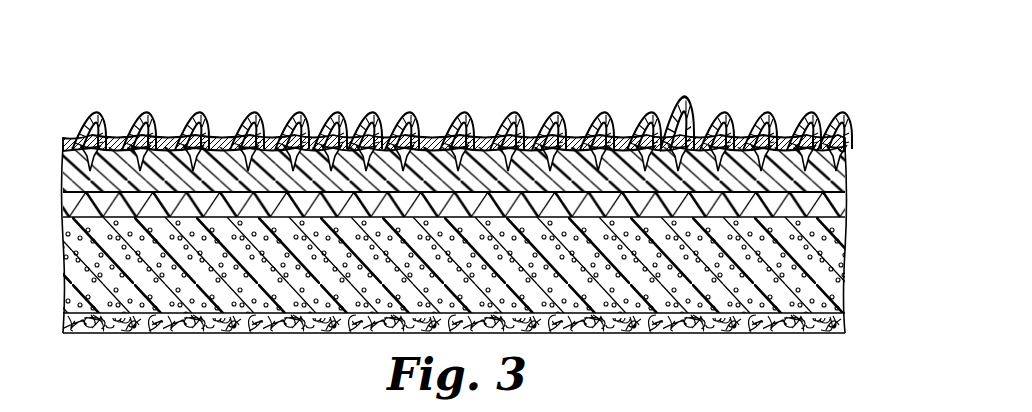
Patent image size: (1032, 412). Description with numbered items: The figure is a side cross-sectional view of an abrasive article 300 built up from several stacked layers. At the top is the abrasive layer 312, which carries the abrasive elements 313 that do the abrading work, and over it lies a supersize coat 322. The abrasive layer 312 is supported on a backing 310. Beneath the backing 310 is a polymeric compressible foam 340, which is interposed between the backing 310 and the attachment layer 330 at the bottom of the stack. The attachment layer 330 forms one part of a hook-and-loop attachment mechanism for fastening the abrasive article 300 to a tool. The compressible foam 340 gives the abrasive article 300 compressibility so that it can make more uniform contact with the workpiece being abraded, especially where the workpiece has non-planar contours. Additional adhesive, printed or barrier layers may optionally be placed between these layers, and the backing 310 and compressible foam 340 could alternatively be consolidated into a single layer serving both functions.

The abrasive article 300 is at (806, 53).
The backing 310 is at (835, 208).
The abrasive layer 312 is at (485, 116).
The tufts / yarn loops 313 is at (334, 116).
The supersize coat 322 is at (148, 112).
The attachment layer 330 is at (842, 327).
The polymeric compressible foam 340 is at (836, 268).